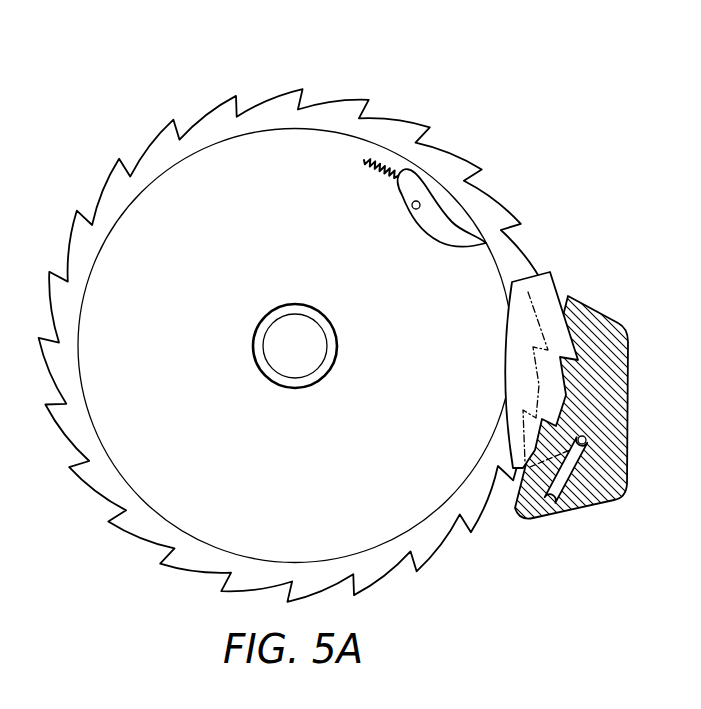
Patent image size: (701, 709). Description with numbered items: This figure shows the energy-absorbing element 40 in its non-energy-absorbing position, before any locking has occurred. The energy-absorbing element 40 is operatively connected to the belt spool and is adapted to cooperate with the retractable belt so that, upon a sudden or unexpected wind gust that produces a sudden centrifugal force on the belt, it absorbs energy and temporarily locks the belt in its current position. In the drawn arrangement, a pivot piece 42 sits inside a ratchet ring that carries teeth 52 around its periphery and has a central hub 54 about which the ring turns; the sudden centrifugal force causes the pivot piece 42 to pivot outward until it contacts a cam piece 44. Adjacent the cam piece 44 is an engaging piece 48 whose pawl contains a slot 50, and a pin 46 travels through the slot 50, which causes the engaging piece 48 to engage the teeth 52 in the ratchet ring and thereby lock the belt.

The energy-absorbing element 40 is at (74, 91).
The pivot piece 42 is at (413, 188).
The cam piece 44 is at (557, 285).
The pin 46 is at (586, 436).
The engaging piece 48 is at (612, 313).
The slot 50 is at (580, 505).
The teeth 52 is at (412, 120).
The arbor hole 54 is at (292, 330).